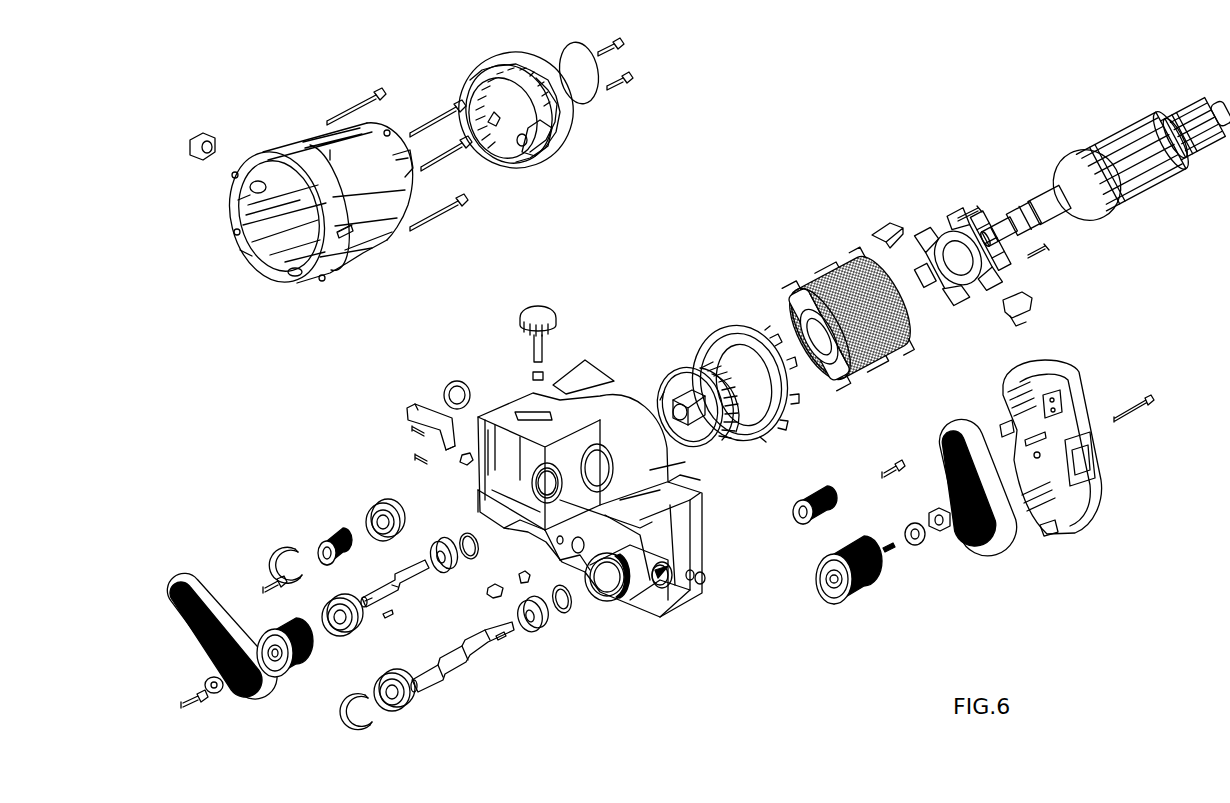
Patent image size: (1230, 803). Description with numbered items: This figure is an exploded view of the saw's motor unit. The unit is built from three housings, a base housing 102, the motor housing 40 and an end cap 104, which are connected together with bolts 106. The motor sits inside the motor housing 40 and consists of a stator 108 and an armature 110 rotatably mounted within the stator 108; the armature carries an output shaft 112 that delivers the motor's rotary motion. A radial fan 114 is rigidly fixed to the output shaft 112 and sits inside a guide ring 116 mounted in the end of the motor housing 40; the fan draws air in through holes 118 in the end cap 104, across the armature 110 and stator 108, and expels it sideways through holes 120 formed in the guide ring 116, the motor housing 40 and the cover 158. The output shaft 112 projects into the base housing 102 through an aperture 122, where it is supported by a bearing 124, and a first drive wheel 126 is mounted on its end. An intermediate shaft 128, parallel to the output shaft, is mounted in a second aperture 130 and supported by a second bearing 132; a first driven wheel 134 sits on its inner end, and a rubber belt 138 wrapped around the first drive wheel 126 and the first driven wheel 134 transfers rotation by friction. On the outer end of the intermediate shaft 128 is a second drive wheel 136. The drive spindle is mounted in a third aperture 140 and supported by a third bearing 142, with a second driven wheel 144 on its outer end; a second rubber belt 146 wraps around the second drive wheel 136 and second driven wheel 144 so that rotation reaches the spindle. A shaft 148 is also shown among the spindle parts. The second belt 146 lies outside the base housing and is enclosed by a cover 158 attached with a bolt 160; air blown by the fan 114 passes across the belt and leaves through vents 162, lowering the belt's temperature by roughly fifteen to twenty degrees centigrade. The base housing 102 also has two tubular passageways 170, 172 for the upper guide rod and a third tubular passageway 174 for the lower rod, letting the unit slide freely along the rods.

The motor housing 40 is at (307, 146).
The base housing 102 is at (508, 410).
The end cap 104 is at (560, 137).
The bolts 106 is at (430, 117).
The stator 108 is at (824, 274).
The armature 110 is at (1098, 142).
The output shaft 112 is at (1078, 205).
The radial fan 114 is at (674, 384).
The guide ring 116 is at (768, 428).
The holes 118 is at (515, 155).
The holes 120 is at (350, 232).
The aperture 122 is at (528, 503).
The bearing 124 is at (384, 507).
The first drive wheel 126 is at (337, 539).
The intermediate shaft 128 is at (398, 588).
The second aperture 130 is at (578, 450).
The second bearing 132 is at (354, 630).
The first driven wheel 134 is at (280, 672).
The second drive wheel 136 is at (816, 494).
The rubber belt 138 is at (212, 602).
The third aperture 140 is at (604, 592).
The third bearing 142 is at (412, 704).
The second driven wheel 144 is at (835, 603).
The second rubber belt 146 is at (1001, 538).
The shaft 148 is at (452, 668).
The cover 158 is at (1088, 512).
The bolt 160 is at (1118, 413).
The vents 162 is at (1001, 400).
The tubular passageway 170 is at (529, 432).
The tubular passageway 172 is at (698, 582).
The third tubular passageway 174 is at (674, 585).